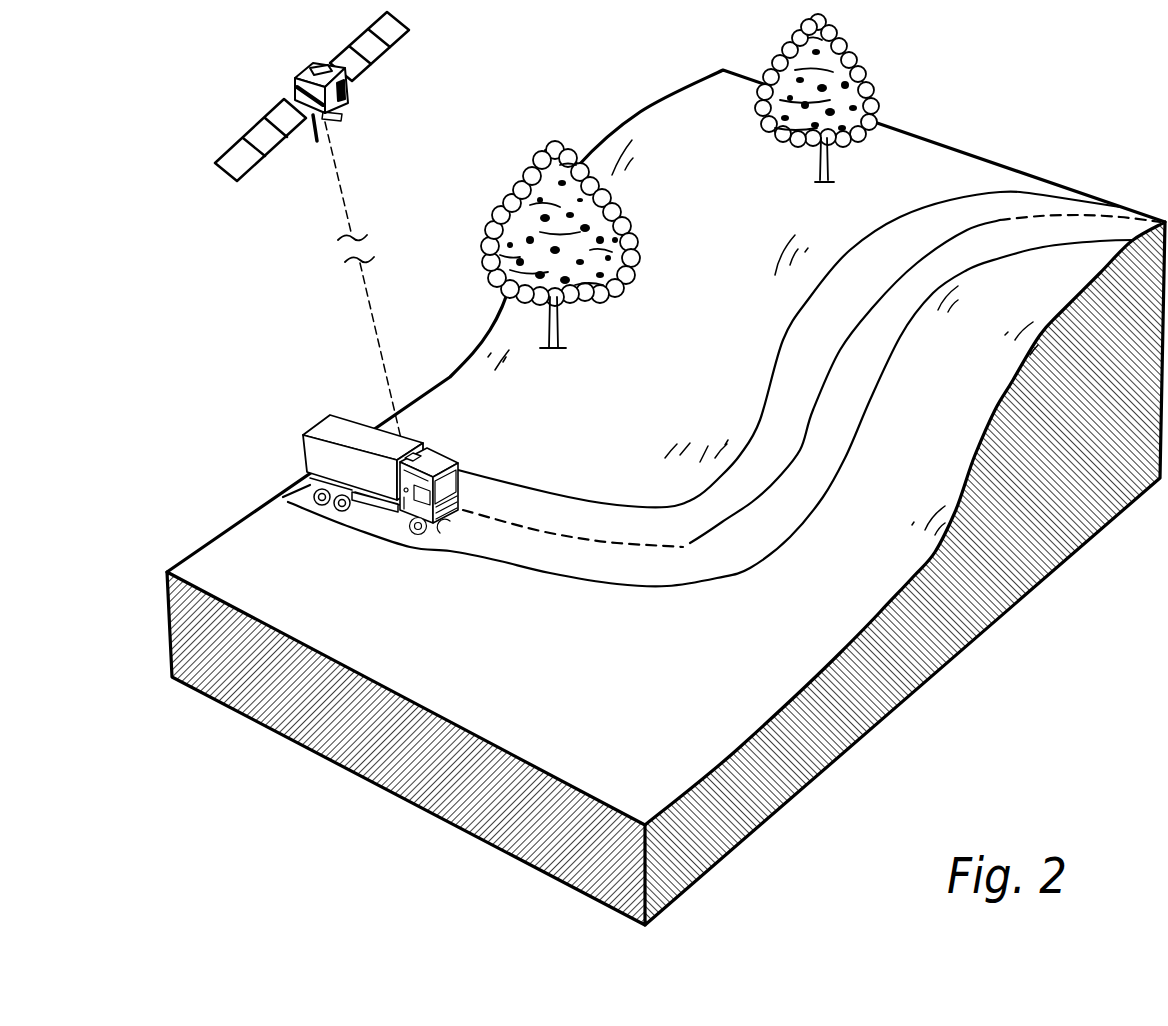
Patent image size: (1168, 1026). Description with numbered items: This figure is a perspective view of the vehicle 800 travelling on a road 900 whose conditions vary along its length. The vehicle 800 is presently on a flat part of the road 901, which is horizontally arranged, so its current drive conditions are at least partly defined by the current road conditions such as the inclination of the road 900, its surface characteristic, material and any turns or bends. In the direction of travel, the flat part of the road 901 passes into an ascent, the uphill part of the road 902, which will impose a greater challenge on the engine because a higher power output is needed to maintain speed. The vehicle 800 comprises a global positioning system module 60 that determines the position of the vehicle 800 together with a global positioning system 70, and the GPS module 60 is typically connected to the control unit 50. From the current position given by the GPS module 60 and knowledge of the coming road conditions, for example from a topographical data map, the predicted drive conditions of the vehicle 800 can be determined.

The control unit 50 is at (395, 513).
The global positioning system module 60 is at (432, 470).
The global positioning system 70 is at (372, 120).
The vehicle 800 is at (345, 404).
The road 900 is at (537, 556).
The flat part of the road 901 is at (458, 536).
The uphill part of the road 902 is at (851, 406).